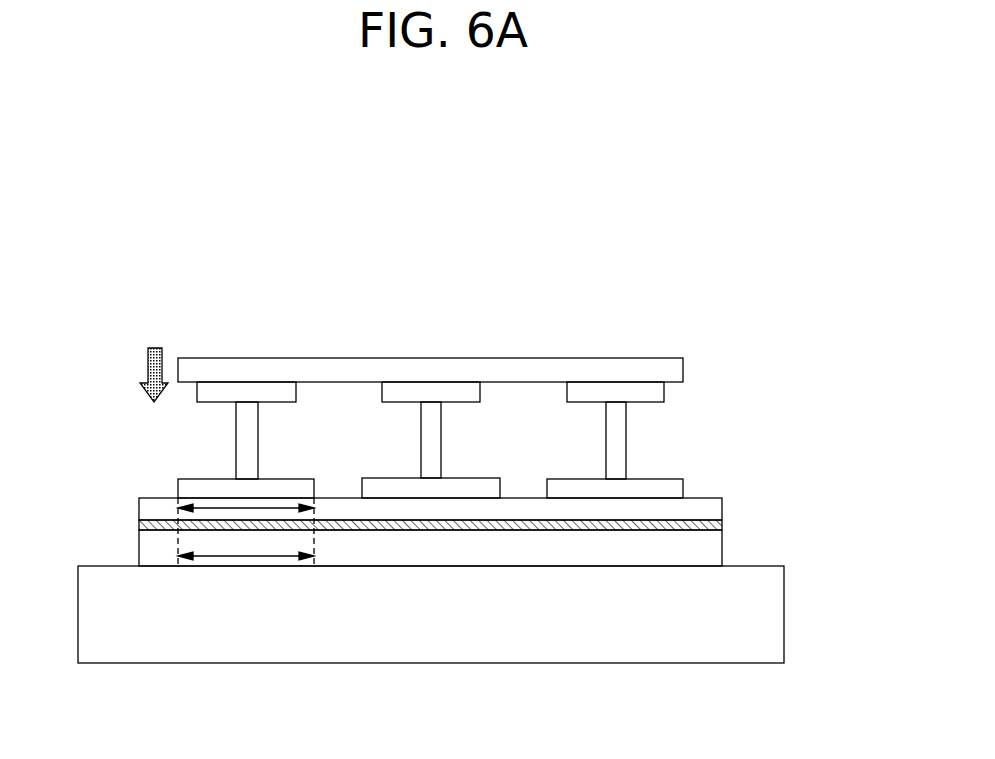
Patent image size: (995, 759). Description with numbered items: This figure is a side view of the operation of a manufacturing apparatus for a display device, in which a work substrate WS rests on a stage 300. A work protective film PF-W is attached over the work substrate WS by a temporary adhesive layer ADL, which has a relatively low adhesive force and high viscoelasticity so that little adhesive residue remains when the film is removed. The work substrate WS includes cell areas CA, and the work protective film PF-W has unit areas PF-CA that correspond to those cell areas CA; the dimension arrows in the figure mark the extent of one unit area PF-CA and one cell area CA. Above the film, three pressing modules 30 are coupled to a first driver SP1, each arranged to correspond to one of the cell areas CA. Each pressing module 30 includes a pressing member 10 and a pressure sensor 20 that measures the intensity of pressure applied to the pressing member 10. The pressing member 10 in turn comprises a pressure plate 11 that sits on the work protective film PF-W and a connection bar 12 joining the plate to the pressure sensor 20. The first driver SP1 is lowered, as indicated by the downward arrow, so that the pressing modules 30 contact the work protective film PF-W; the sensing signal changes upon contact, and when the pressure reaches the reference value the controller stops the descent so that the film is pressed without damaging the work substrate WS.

The first driver SP1 is at (672, 370).
The pressing module 30 is at (522, 440).
The pressure sensor 20 is at (654, 391).
The pressing member 10 is at (497, 450).
The connection bar 12 is at (618, 437).
The pressure plate 11 is at (470, 481).
The work protective film PF-W is at (715, 509).
The adhesive layer ADL is at (714, 524).
The work substrate WS is at (714, 552).
The stage 300 is at (770, 613).
The unit area PF-CA is at (210, 505).
The cell area CA is at (208, 551).